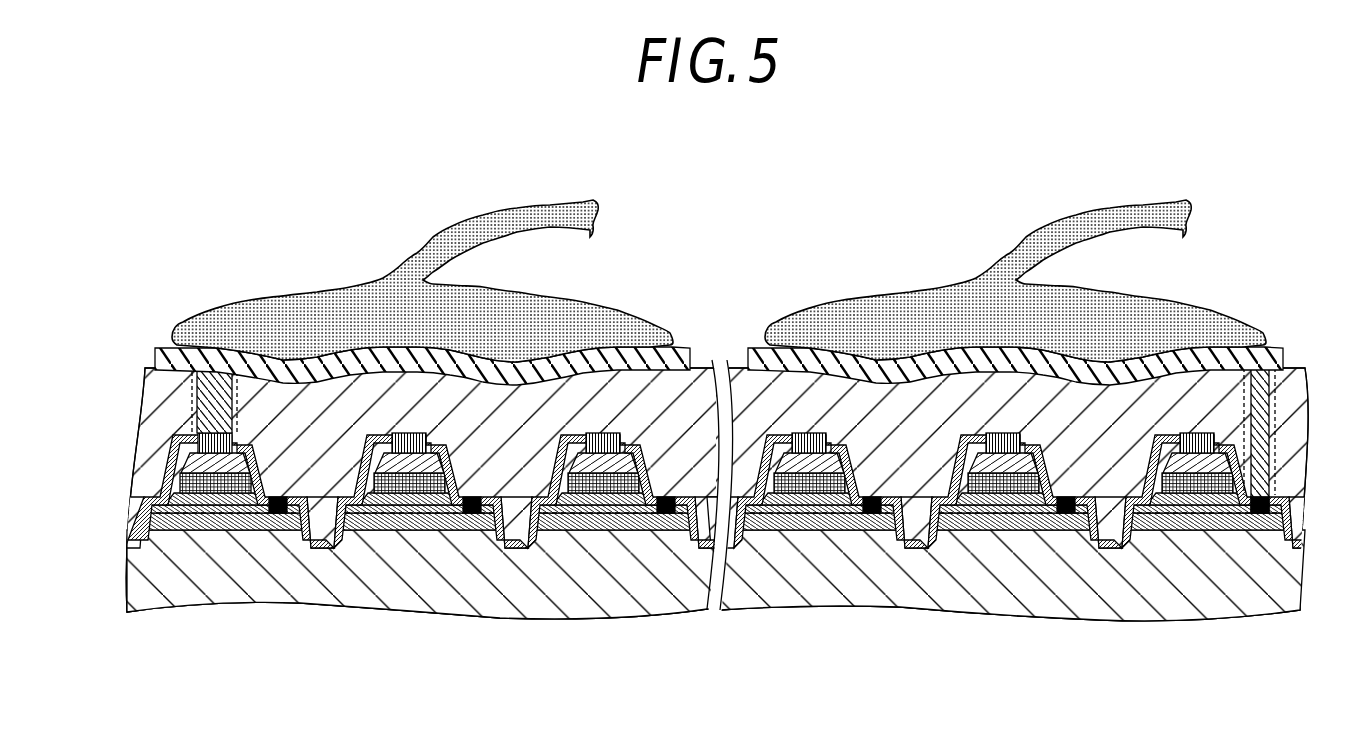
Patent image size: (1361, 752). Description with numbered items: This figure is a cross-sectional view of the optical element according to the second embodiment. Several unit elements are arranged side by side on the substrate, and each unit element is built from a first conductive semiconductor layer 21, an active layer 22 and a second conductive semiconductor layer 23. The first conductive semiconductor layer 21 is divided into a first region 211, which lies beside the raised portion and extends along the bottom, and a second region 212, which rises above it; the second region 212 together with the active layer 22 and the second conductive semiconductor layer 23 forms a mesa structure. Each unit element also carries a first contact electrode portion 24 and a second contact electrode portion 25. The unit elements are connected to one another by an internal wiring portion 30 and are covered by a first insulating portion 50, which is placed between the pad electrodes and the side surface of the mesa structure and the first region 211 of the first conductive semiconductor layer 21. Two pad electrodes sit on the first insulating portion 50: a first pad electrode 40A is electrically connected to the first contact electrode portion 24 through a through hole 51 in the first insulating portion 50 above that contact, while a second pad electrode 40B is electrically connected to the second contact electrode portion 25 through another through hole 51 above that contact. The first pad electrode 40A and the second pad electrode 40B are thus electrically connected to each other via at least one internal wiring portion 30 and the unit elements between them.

The second pad electrode 40B is at (172, 347).
The first pad electrode 40A is at (1285, 347).
The through hole 51 is at (192, 404).
The first insulating portion 50 is at (143, 440).
The second conductive semiconductor layer 23 is at (193, 460).
The active layer 22 is at (190, 478).
The first conductive semiconductor layer 21 is at (84, 493).
The second region 212 is at (163, 503).
The first region 211 is at (165, 522).
The second contact electrode portion 25 is at (200, 492).
The internal wiring portion 30 is at (1114, 548).
The first contact electrode portion 24 is at (1257, 515).